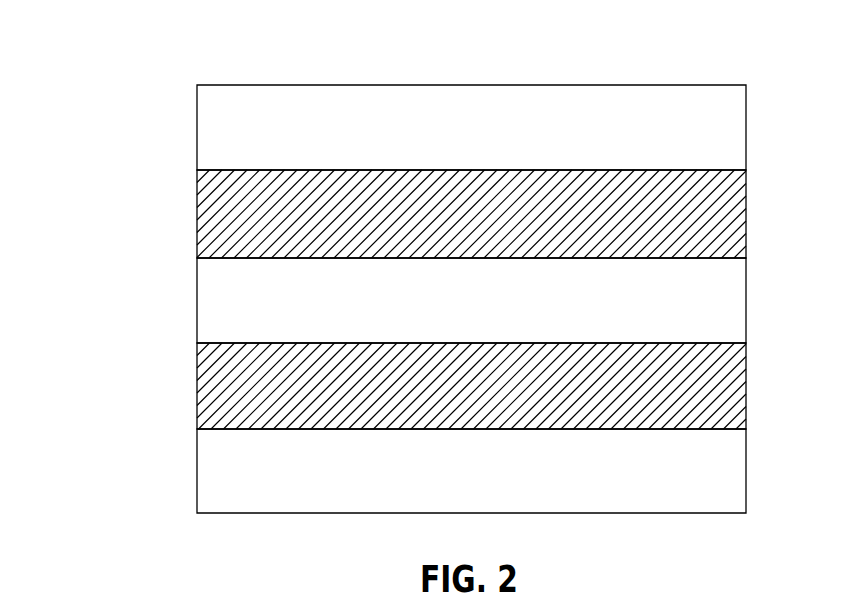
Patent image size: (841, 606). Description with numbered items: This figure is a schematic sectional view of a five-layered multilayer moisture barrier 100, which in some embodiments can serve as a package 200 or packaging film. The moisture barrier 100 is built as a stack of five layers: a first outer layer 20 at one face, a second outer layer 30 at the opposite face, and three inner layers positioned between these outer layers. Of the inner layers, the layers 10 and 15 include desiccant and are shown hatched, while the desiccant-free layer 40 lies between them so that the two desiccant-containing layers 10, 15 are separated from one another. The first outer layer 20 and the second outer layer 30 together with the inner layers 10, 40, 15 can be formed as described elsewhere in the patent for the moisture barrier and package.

The multilayer moisture barrier 100 is at (426, 264).
The package 200 is at (180, 70).
The first outer layer 20 is at (722, 128).
The inner layer 10 is at (722, 222).
The desiccant-free layer 40 is at (722, 300).
The inner layer 15 is at (722, 397).
The second outer layer 30 is at (728, 480).